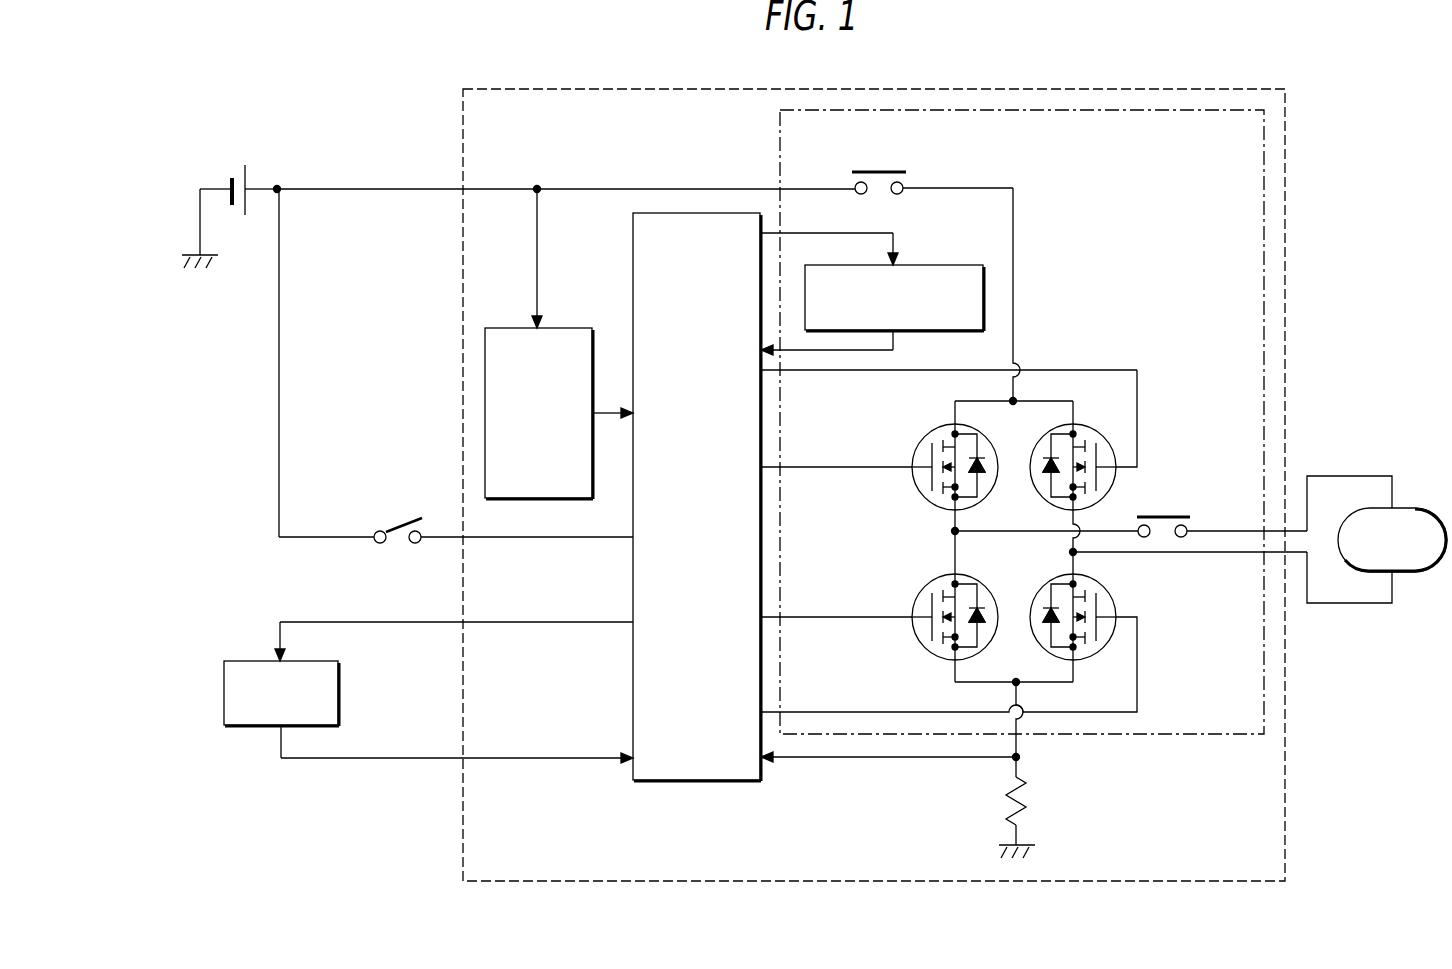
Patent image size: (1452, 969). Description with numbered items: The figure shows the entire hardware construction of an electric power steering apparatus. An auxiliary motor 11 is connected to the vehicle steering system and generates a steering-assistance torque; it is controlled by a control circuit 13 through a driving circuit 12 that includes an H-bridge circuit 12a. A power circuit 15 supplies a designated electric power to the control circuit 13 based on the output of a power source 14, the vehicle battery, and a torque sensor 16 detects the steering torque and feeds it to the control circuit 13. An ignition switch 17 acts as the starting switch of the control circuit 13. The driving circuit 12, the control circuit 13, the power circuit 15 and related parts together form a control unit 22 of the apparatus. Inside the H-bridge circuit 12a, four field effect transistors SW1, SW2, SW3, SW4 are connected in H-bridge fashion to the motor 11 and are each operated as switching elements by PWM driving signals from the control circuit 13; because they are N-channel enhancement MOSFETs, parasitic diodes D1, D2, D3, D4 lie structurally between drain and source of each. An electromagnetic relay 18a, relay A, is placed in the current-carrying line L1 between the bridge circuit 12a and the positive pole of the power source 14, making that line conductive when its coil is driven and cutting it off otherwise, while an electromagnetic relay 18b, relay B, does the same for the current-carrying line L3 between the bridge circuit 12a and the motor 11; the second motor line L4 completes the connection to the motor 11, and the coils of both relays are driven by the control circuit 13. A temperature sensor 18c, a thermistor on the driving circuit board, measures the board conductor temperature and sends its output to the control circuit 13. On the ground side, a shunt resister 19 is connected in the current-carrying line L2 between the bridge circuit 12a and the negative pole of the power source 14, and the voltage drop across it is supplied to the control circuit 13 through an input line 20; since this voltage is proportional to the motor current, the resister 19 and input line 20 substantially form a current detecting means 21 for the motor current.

The auxiliary motor 11 is at (1378, 542).
The driving circuit 12 is at (778, 148).
The H-bridge circuit 12a is at (989, 510).
The control circuit 13 is at (697, 782).
The power source 14 is at (238, 161).
The power circuit 15 is at (565, 328).
The torque sensor 16 is at (340, 690).
The ignition switch 17 is at (400, 522).
The electromagnetic relay 18a is at (876, 172).
The electromagnetic relay 18b is at (1160, 514).
The temperature sensor 18c is at (936, 263).
The resister 19 is at (1027, 794).
The input line 20 is at (928, 757).
The current detecting means 21 is at (845, 797).
The control unit 22 is at (1077, 87).
The field effect transistor SW1 is at (952, 454).
The field effect transistor SW2 is at (953, 632).
The field effect transistor SW3 is at (1077, 454).
The field effect transistor SW4 is at (1079, 632).
The diode D1 is at (978, 474).
The diode D2 is at (978, 624).
The diode D3 is at (1050, 459).
The diode D4 is at (1050, 610).
The current-carrying line L1 is at (1014, 272).
The current-carrying line L2 is at (1020, 690).
The current-carrying line L3 is at (1347, 477).
The current-carrying line L4 is at (1353, 604).